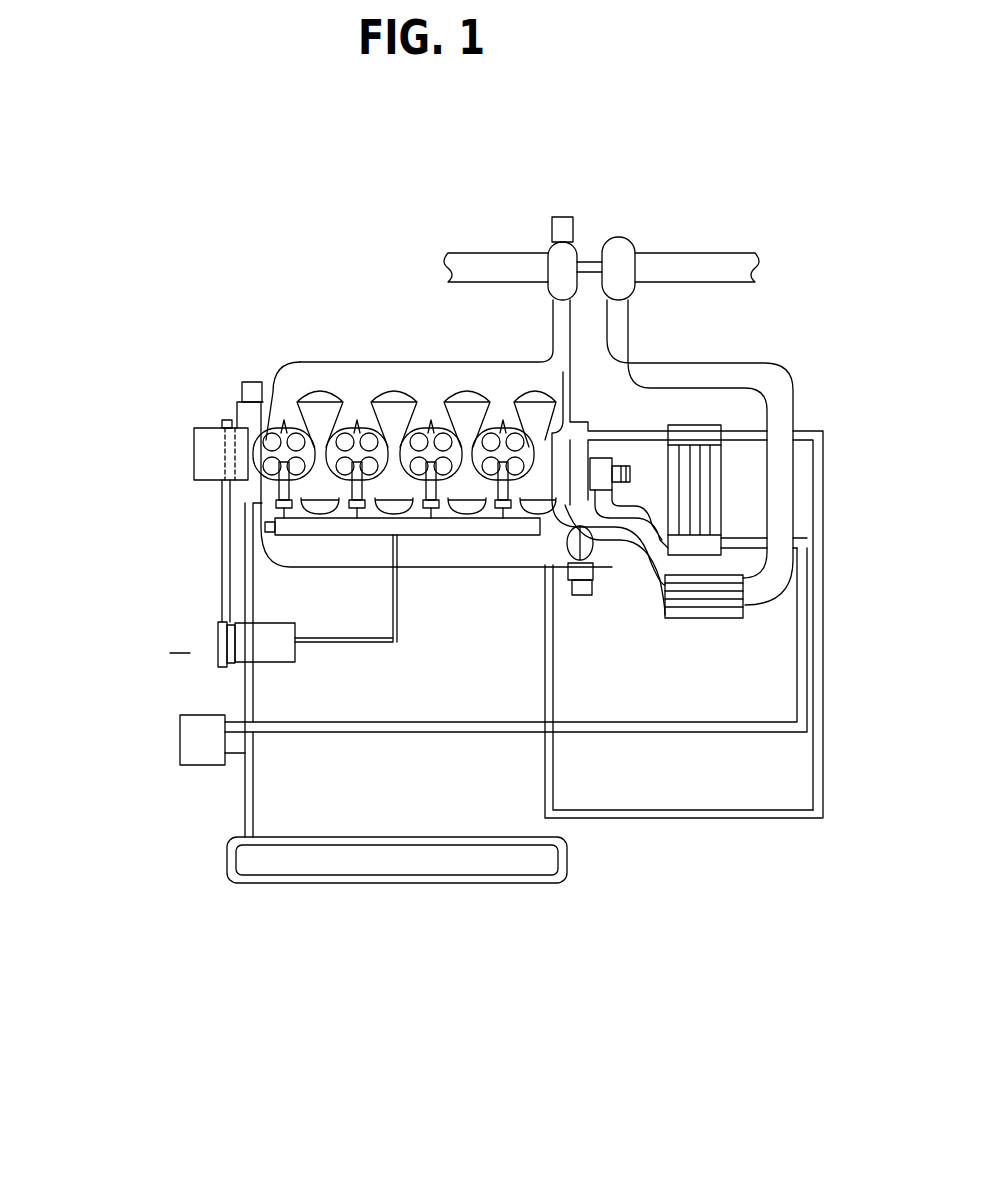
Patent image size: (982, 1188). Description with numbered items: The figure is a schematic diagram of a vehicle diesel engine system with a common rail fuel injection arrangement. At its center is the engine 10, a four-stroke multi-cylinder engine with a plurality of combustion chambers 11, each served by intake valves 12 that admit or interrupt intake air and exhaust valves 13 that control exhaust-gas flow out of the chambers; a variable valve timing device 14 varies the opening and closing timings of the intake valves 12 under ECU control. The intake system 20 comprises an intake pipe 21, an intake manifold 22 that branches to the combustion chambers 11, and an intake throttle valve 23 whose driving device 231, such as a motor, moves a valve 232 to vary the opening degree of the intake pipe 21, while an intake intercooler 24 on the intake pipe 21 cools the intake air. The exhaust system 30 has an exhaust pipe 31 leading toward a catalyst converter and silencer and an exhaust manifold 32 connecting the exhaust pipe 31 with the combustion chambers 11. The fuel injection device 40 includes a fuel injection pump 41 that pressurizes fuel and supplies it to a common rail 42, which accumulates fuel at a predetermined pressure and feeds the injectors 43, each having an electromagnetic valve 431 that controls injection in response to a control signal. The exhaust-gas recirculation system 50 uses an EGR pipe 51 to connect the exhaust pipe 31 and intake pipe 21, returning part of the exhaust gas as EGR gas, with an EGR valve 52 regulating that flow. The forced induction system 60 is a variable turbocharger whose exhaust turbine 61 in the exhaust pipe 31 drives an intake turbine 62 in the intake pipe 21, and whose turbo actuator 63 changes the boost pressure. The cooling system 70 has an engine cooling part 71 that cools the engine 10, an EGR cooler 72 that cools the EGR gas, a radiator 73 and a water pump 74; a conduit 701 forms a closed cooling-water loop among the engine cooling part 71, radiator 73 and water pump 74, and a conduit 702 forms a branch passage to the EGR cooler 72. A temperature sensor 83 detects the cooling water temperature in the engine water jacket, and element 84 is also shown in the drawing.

The engine 10 is at (172, 480).
The combustion chambers 11 is at (262, 455).
The intake valves 12 is at (275, 472).
The exhaust valves 13 is at (224, 420).
The variable valve timing device 14 is at (200, 428).
The intake system 20 is at (720, 642).
The intake pipe 21 is at (680, 250).
The intake manifold 22 is at (300, 505).
The intake throttle valve 23 is at (722, 750).
The driving device 231 is at (600, 660).
The valve 232 is at (610, 650).
The intake intercooler 24 is at (745, 620).
The exhaust system 30 is at (428, 236).
The exhaust pipe 31 is at (512, 250).
The exhaust manifold 32 is at (266, 440).
The fuel injection device 40 is at (172, 661).
The fuel injection pump 41 is at (268, 660).
The common rail 42 is at (540, 575).
The injectors 43 is at (266, 527).
The electromagnetic valve 431 is at (258, 542).
The exhaust-gas recirculation system 50 is at (672, 386).
The EGR pipe 51 is at (700, 425).
The EGR valve 52 is at (630, 570).
The forced induction system 60 is at (620, 200).
The exhaust turbine 61 is at (575, 245).
The intake turbine 62 is at (630, 237).
The turbo actuator 63 is at (561, 217).
The cooling system 70 is at (380, 915).
The conduit 701 is at (243, 690).
The conduit 702 is at (333, 735).
The engine cooling part 71 is at (258, 527).
The EGR cooler 72 is at (722, 495).
The radiator 73 is at (227, 856).
The water pump 74 is at (182, 762).
The temperature sensor 83 is at (250, 382).
The signal line 84 is at (250, 556).